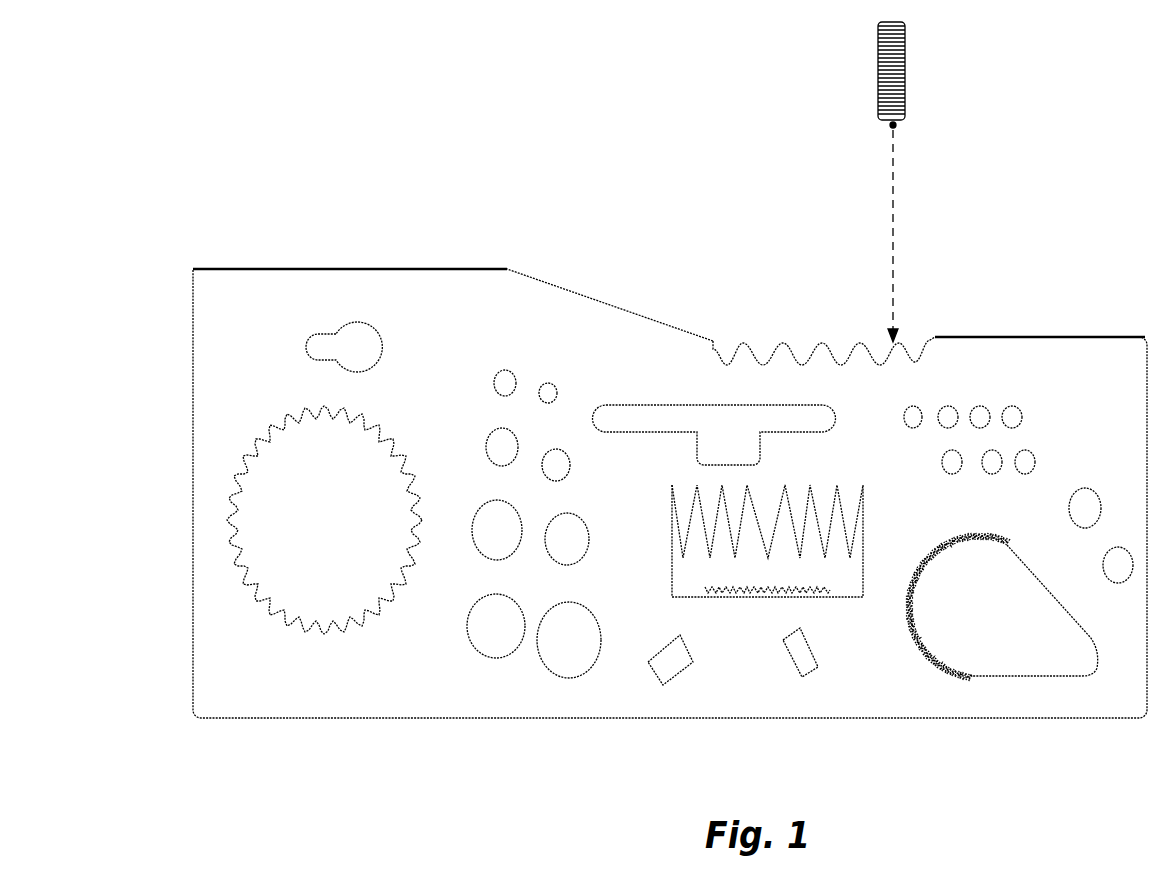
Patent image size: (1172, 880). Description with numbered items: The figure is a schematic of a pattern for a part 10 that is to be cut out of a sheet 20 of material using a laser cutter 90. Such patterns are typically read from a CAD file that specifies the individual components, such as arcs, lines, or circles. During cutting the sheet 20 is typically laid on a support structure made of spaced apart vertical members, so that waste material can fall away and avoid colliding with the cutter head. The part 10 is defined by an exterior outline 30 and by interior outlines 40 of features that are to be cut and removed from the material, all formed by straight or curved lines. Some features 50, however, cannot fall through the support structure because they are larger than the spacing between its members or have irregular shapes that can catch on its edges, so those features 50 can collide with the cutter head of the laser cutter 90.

The part 10 is at (560, 327).
The sheet 20 is at (360, 268).
The exterior outline 30 is at (965, 595).
The interior outlines 40 is at (270, 445).
The features 50 is at (743, 595).
The laser cutter 90 is at (878, 70).